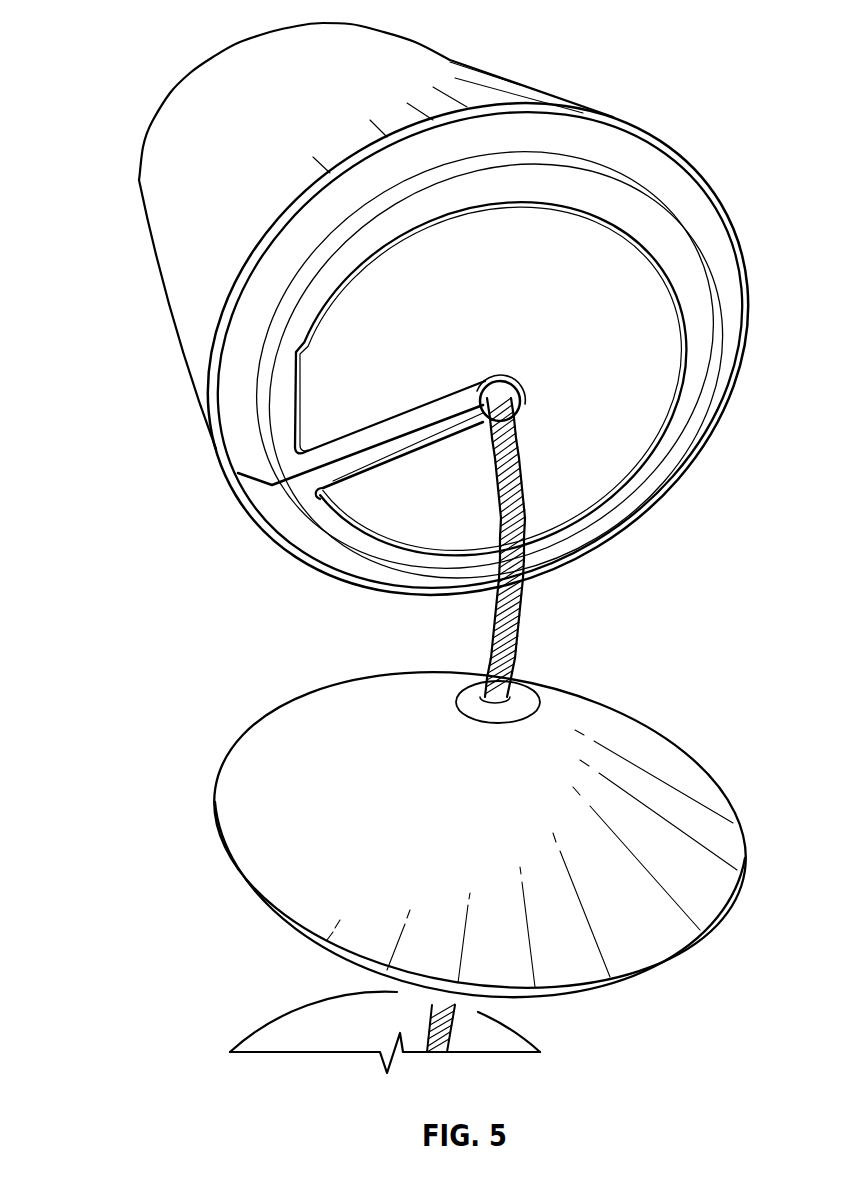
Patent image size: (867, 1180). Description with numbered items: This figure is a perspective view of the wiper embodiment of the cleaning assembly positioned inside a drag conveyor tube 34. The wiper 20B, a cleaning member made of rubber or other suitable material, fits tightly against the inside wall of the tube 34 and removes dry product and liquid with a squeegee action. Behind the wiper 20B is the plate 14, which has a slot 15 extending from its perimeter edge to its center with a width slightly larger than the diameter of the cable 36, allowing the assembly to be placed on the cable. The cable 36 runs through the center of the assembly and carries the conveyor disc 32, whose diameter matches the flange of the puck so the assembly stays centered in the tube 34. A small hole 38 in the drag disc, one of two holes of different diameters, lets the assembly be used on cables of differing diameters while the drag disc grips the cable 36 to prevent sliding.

The plate 14 is at (603, 278).
The slot 15 is at (317, 488).
The wiper 20B is at (670, 175).
The conveyor disc 32 is at (645, 745).
The tube 34 is at (182, 260).
The cable 36 is at (493, 613).
The small hole 38 is at (515, 389).